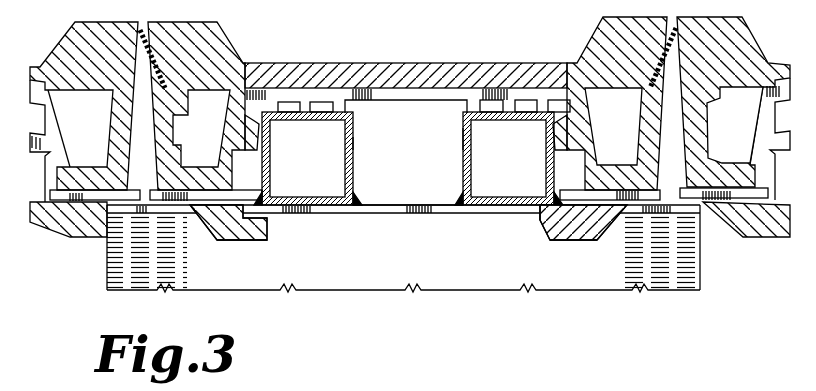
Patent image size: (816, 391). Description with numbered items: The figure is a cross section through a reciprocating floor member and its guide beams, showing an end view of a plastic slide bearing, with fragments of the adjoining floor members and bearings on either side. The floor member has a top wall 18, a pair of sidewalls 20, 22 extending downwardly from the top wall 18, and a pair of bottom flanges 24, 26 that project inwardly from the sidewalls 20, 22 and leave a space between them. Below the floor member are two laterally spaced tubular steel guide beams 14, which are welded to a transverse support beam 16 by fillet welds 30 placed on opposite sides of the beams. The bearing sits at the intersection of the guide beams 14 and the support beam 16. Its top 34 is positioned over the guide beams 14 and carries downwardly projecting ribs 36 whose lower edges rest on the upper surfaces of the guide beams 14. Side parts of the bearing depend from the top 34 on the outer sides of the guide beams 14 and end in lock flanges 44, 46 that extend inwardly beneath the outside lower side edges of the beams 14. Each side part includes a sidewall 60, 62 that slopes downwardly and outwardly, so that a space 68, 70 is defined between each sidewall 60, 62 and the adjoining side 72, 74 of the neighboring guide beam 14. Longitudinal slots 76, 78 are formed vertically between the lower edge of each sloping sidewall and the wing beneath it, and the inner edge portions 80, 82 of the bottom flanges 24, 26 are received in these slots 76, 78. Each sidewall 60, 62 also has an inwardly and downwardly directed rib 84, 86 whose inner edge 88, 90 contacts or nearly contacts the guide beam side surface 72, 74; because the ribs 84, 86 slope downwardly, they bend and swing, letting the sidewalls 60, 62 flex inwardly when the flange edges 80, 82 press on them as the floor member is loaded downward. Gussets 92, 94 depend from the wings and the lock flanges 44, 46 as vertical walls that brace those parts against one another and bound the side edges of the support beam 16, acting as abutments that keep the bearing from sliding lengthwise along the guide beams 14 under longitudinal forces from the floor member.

The guide beam 14 is at (463, 128).
The transverse support beam 16 is at (428, 275).
The top wall 18 is at (322, 70).
The sidewall 20 is at (157, 113).
The sidewall 22 is at (657, 128).
The bottom flange 24 is at (155, 215).
The bottom flange 26 is at (640, 215).
The fillet weld 30 is at (460, 190).
The top 34 is at (407, 97).
The rib 36 is at (335, 120).
The lock flange 44 is at (268, 243).
The lock flange 46 is at (548, 240).
The sidewall 60 is at (178, 122).
The sidewall 62 is at (575, 126).
The space 68 is at (250, 170).
The space 70 is at (560, 168).
The guide beam side 72 is at (277, 215).
The guide beam side 74 is at (543, 168).
The left base flange 76 is at (193, 205).
The longitudinal slot 78 is at (628, 235).
The inner edge portion 80 is at (245, 233).
The inner edge portion 82 is at (593, 232).
The rib 84 is at (250, 127).
The rib 86 is at (568, 110).
The inner edge 88 is at (270, 147).
The inner edge 90 is at (548, 148).
The gusset 92 is at (245, 238).
The gusset 94 is at (576, 228).